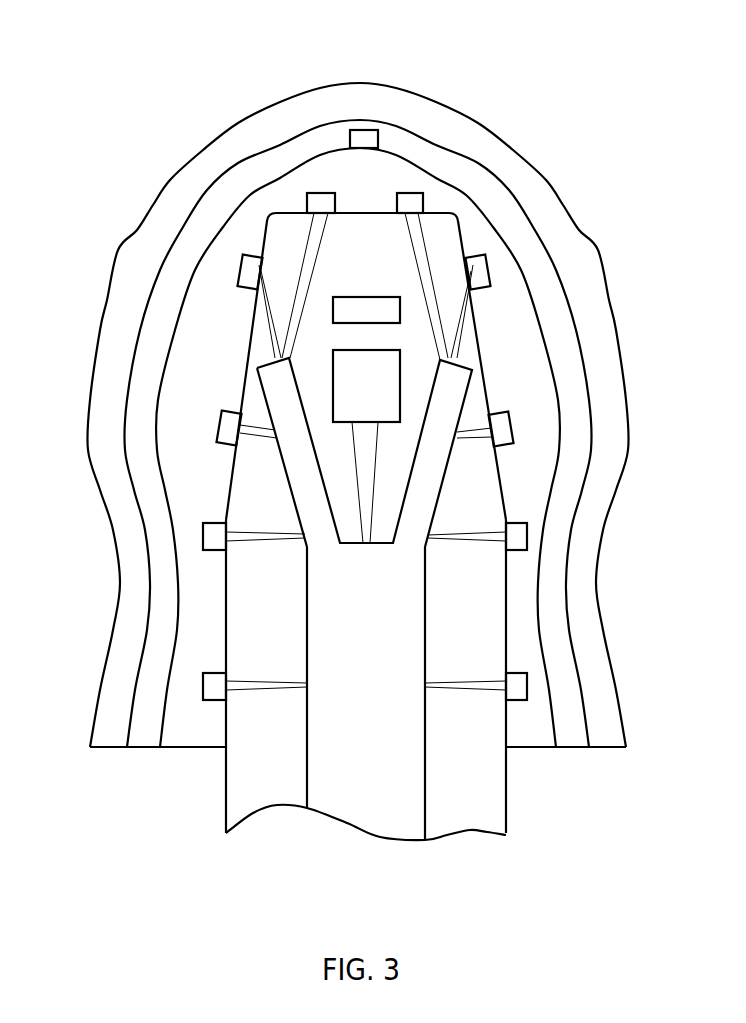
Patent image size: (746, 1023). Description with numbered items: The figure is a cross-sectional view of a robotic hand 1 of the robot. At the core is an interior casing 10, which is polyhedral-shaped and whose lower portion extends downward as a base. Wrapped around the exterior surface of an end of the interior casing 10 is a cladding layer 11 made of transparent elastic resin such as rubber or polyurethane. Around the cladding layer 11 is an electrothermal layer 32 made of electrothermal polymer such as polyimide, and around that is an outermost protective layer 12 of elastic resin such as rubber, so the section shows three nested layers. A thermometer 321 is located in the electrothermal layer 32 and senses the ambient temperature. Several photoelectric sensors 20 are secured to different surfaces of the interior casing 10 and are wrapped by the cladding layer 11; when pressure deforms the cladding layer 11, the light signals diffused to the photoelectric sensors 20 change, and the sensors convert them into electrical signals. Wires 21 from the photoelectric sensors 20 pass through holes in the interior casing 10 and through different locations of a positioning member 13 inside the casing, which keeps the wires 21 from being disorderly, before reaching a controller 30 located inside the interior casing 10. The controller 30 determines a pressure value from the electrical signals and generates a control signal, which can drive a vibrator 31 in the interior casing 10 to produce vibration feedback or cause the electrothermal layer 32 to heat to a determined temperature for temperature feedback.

The robotic hand 1 is at (246, 56).
The interior casing 10 is at (444, 680).
The cladding layer 11 is at (188, 378).
The protective layer 12 is at (397, 102).
The positioning member 13 is at (410, 647).
The photoelectric sensors 20 is at (473, 270).
The wires 21 is at (425, 230).
The controller 30 is at (387, 380).
The vibrator 31 is at (380, 313).
The electrothermal layer 32 is at (452, 163).
The thermometer 321 is at (360, 143).